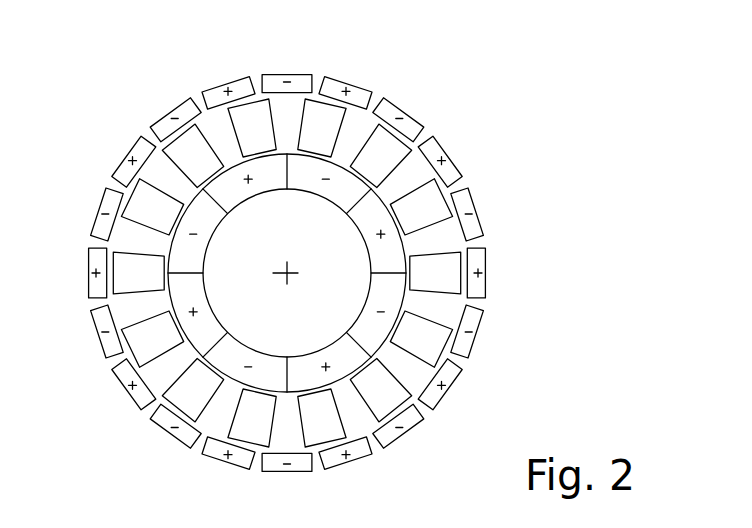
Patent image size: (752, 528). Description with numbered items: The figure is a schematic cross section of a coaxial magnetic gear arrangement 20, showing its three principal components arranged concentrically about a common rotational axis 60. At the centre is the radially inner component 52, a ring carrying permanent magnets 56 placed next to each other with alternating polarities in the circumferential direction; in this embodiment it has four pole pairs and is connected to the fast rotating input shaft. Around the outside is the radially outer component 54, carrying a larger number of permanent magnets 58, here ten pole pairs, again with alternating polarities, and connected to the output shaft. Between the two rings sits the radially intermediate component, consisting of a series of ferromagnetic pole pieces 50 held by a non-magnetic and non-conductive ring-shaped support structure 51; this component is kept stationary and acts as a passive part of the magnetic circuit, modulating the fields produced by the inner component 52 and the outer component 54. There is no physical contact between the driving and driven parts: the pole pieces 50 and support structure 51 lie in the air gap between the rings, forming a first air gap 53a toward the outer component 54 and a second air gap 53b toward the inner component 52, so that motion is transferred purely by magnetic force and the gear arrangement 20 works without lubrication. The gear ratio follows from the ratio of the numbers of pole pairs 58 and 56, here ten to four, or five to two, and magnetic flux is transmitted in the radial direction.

The coaxial magnetic gear arrangement 20 is at (452, 113).
The pole pieces 50 is at (183, 395).
The support structure 51 is at (210, 413).
The inner component 52 is at (168, 302).
The first air gap 53a is at (457, 170).
The second air gap 53b is at (460, 197).
The outer component 54 is at (172, 117).
The magnetic pole pairs of the inner component 56 is at (230, 193).
The magnetic pole pairs of the outer component 58 is at (480, 227).
The rotational axis 60 is at (292, 268).